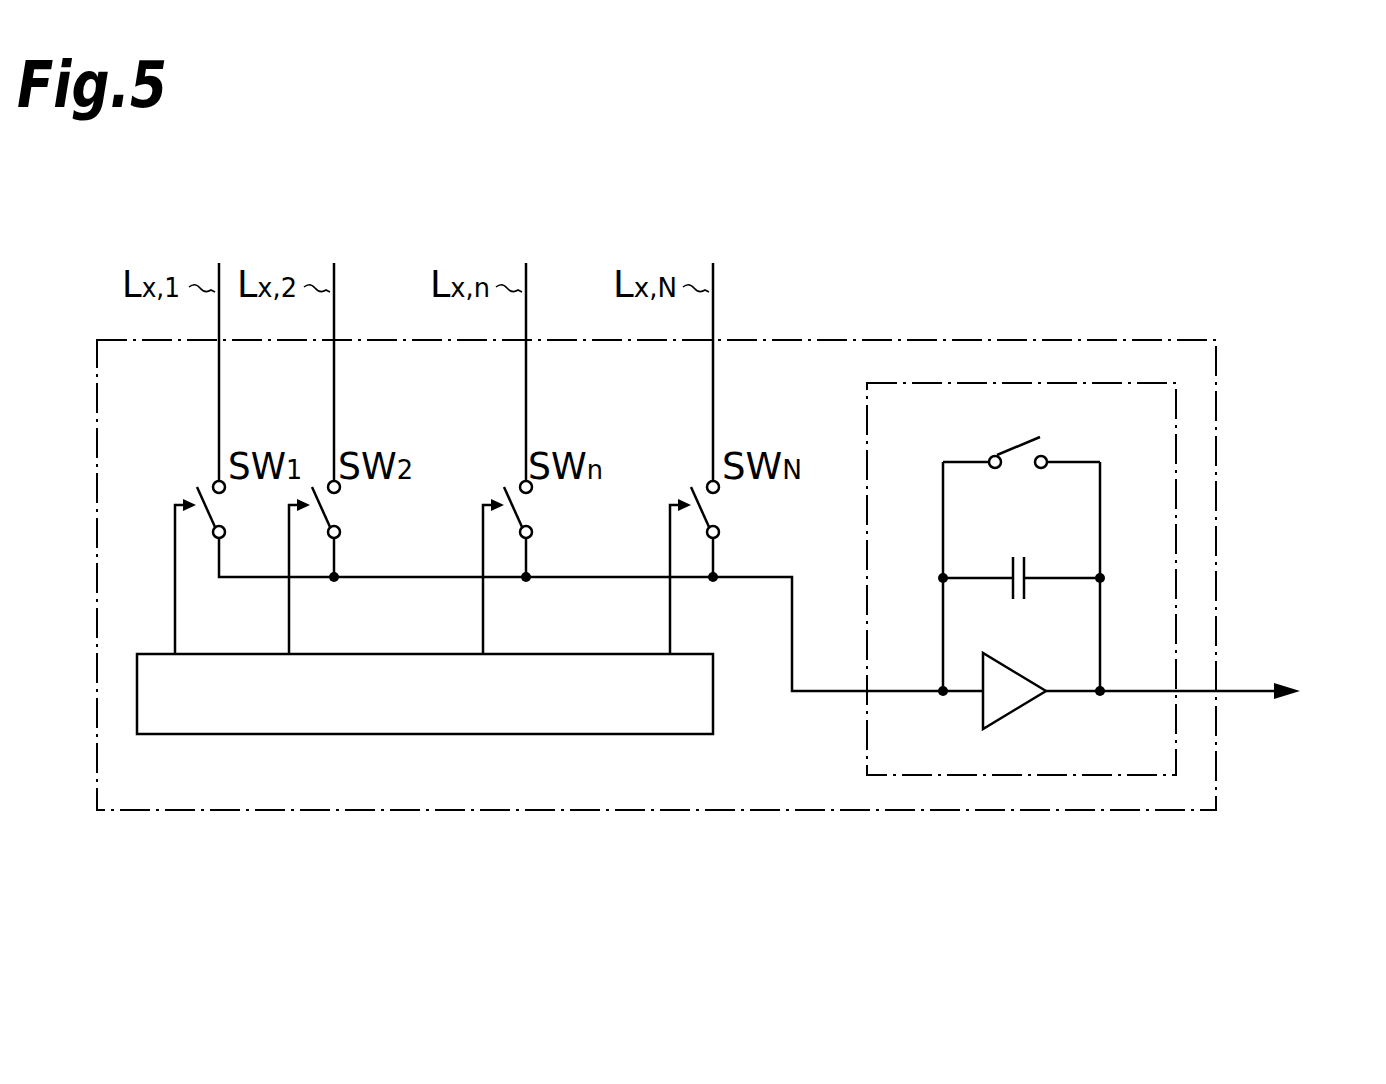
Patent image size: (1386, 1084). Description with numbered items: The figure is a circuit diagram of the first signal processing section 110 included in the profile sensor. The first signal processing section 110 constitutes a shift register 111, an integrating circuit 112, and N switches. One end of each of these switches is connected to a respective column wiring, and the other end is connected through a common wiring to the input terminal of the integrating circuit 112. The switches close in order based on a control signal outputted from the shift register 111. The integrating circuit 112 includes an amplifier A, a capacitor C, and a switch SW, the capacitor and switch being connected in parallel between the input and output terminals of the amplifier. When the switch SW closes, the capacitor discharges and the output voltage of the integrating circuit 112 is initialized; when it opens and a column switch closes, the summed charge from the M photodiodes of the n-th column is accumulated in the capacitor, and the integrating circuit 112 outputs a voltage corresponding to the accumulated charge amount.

The first signal processing section 110 is at (810, 338).
The shift register 111 is at (482, 738).
The integrating circuit 112 is at (867, 738).